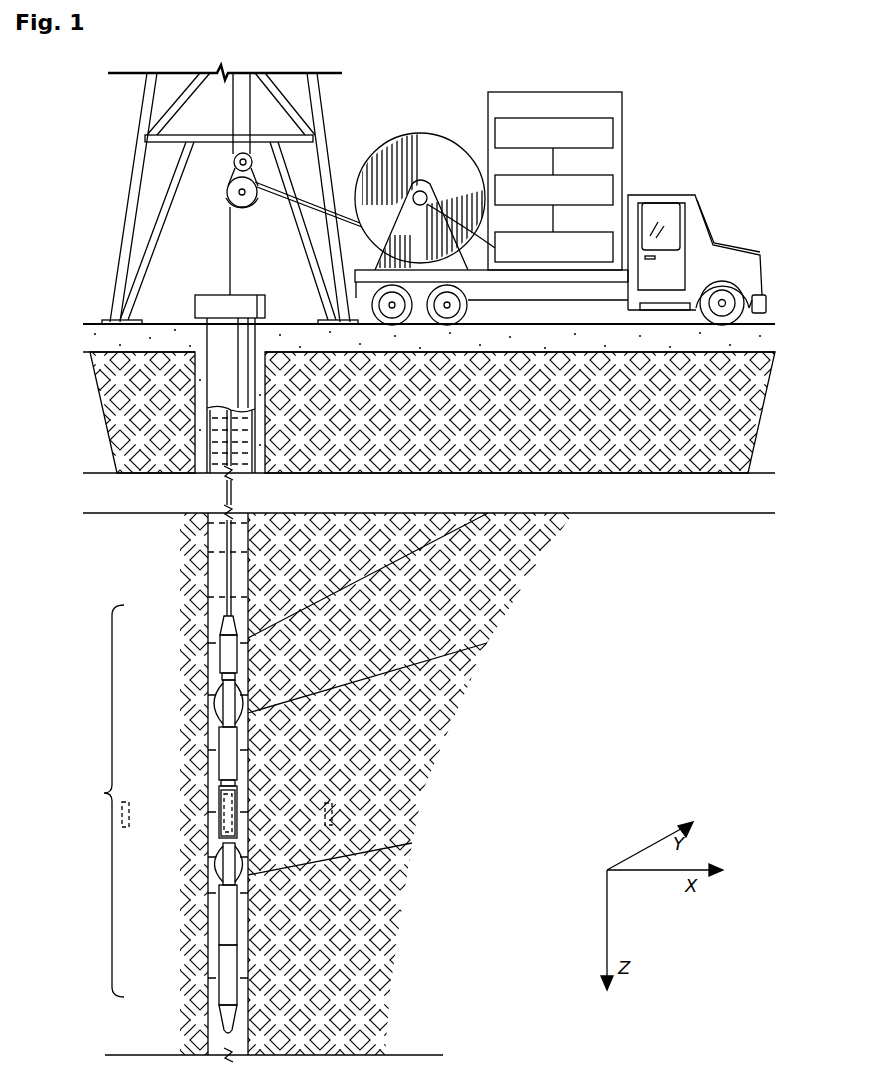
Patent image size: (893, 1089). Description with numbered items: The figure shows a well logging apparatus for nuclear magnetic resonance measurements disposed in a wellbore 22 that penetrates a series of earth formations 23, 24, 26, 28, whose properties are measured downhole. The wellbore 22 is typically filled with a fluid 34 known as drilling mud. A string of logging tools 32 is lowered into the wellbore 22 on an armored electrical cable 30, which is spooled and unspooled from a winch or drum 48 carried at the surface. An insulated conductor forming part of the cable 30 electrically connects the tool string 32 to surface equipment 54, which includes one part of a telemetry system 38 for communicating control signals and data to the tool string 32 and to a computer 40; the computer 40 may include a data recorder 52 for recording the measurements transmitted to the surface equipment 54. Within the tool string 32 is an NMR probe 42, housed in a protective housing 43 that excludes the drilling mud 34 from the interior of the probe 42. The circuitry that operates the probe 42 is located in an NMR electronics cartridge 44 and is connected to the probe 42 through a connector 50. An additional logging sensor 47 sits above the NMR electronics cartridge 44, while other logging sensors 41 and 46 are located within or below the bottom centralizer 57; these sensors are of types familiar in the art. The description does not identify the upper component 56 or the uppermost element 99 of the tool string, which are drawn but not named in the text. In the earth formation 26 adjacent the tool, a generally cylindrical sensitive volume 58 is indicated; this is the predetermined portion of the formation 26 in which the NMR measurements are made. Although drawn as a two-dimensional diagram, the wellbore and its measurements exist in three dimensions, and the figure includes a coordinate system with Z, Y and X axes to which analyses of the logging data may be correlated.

The wellbore 22 is at (219, 1012).
The earth formation 23 is at (320, 559).
The earth formation 24 is at (318, 656).
The earth formation 26 is at (318, 757).
The earth formation 28 is at (318, 951).
The armored electrical cable 30 is at (226, 592).
The string of logging tools 32 is at (100, 801).
The fluid 34 is at (218, 549).
The telemetry system 38 is at (568, 232).
The computer 40 is at (568, 175).
The logging sensor 41 is at (219, 912).
The NMR probe 42 is at (224, 827).
The protective housing 43 is at (221, 801).
The NMR electronics cartridge 44 is at (219, 758).
The logging sensor 46 is at (219, 963).
The additional logging sensor 47 is at (219, 655).
The winch or drum 48 is at (418, 134).
The connector 50 is at (221, 783).
The data recorder 52 is at (568, 118).
The surface equipment 54 is at (568, 92).
The centralizer 56 is at (217, 704).
The bottom centralizer 57 is at (217, 868).
The sensitive volume 58 is at (125, 827).
The cable head 99 is at (221, 626).